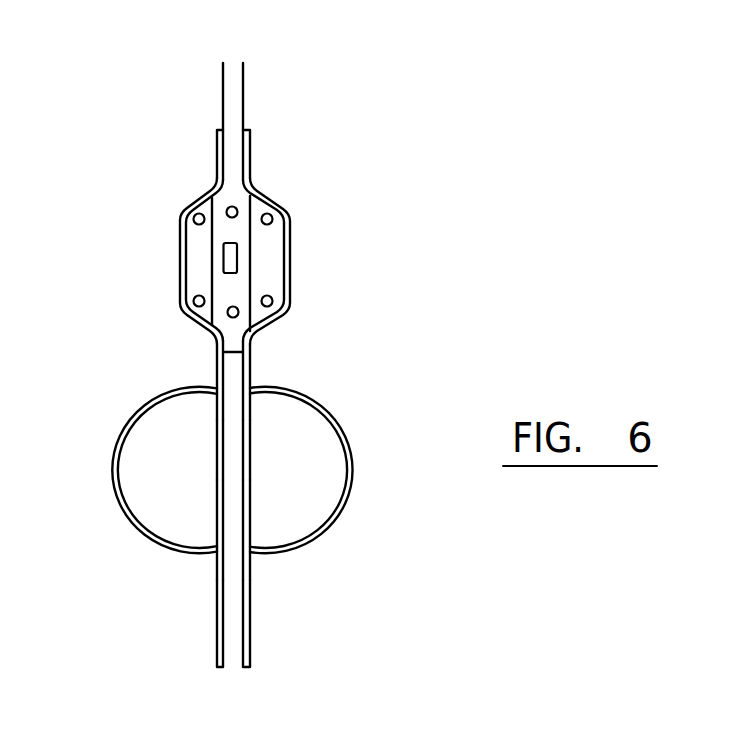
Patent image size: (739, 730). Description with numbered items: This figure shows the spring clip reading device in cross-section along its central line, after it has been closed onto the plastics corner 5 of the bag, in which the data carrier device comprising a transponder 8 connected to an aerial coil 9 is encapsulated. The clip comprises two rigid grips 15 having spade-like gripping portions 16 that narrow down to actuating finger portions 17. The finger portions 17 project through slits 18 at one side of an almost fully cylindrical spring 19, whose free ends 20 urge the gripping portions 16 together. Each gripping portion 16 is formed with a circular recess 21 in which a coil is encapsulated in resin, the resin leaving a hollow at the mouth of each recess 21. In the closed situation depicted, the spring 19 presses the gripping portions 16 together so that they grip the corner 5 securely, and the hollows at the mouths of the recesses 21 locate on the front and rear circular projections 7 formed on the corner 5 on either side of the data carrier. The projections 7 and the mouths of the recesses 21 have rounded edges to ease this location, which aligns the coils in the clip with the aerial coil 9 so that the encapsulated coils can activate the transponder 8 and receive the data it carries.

The plastics corner 5 is at (240, 97).
The circular projections 7 is at (210, 249).
The transponder 8 is at (239, 260).
The aerial coil 9 is at (227, 210).
The rigid grips 15 is at (217, 363).
The gripping portions 16 is at (215, 142).
The actuating finger portions 17 is at (215, 613).
The slits 18 is at (215, 558).
The spring 19 is at (315, 505).
The free ends 20 is at (217, 397).
The circular recess 21 is at (179, 284).